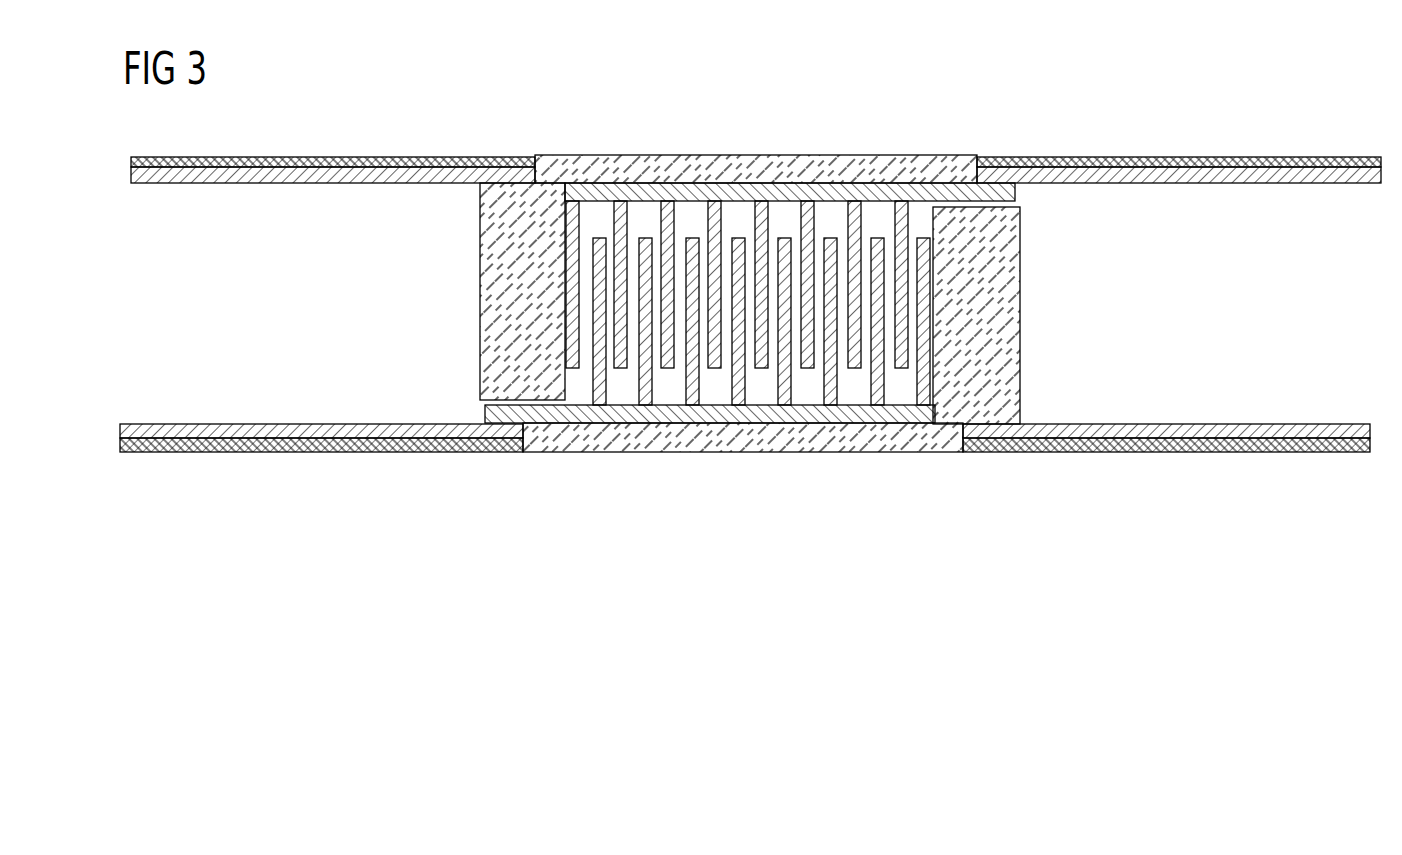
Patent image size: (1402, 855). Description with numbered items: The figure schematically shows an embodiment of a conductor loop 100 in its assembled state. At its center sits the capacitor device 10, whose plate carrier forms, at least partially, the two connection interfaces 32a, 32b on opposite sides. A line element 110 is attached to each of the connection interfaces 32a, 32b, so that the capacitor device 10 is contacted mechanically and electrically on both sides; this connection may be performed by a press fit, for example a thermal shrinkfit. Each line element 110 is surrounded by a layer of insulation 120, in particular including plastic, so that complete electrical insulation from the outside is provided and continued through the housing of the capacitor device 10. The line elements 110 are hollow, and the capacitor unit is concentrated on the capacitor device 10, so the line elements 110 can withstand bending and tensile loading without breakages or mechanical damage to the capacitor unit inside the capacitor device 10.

The capacitor device 10 is at (753, 257).
The connection interface 32a is at (1044, 203).
The connection interface 32b is at (464, 403).
The conductor loop 100 is at (695, 545).
The line element 110 is at (264, 183).
The layer of insulation 120 is at (370, 157).